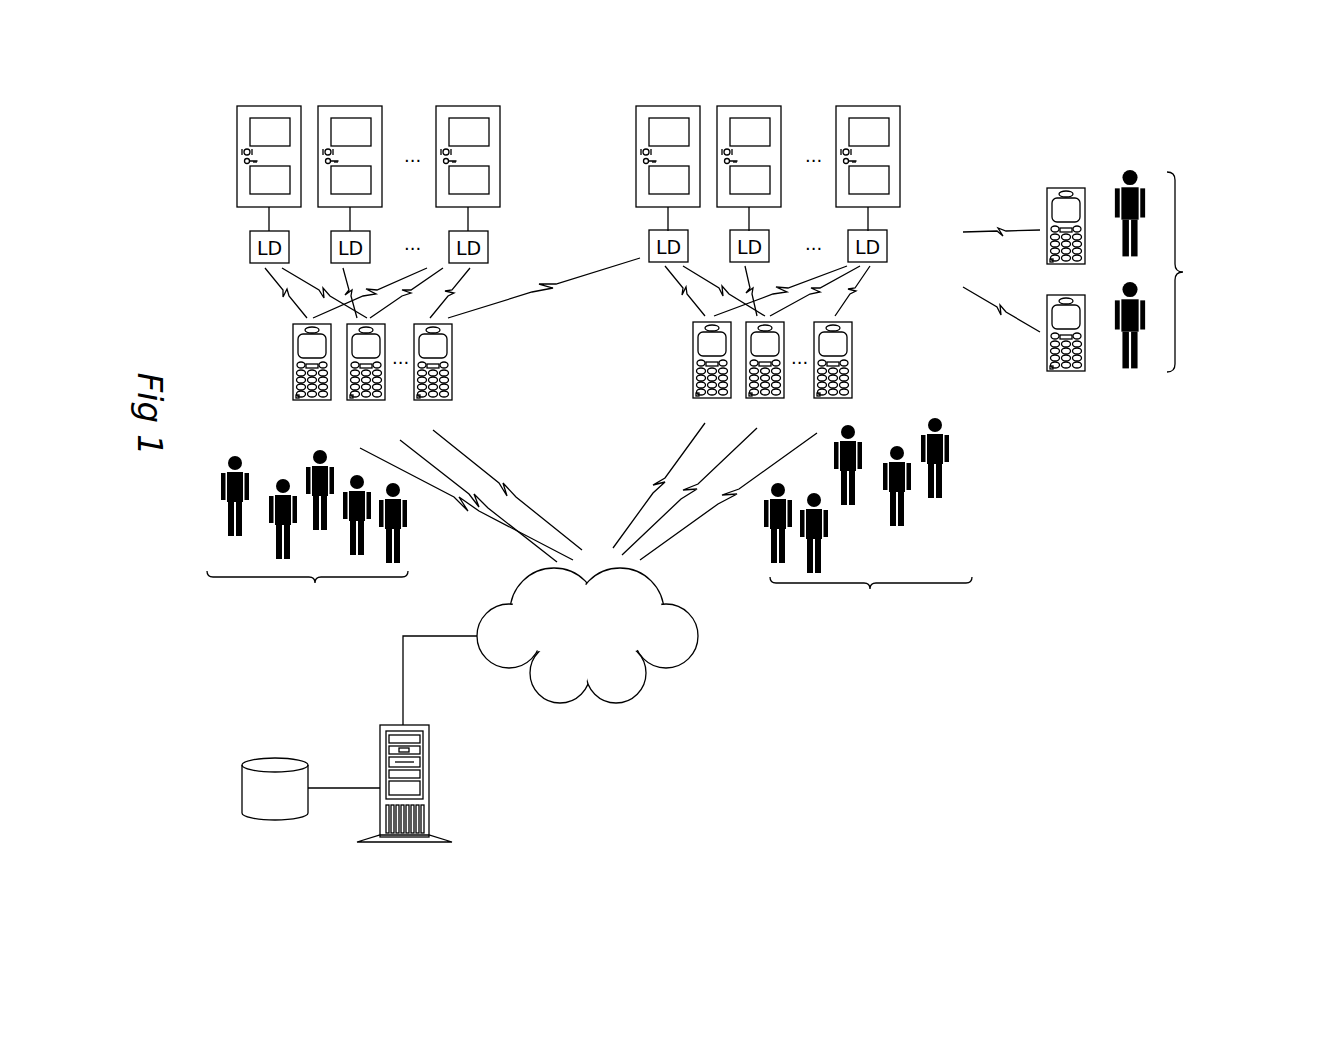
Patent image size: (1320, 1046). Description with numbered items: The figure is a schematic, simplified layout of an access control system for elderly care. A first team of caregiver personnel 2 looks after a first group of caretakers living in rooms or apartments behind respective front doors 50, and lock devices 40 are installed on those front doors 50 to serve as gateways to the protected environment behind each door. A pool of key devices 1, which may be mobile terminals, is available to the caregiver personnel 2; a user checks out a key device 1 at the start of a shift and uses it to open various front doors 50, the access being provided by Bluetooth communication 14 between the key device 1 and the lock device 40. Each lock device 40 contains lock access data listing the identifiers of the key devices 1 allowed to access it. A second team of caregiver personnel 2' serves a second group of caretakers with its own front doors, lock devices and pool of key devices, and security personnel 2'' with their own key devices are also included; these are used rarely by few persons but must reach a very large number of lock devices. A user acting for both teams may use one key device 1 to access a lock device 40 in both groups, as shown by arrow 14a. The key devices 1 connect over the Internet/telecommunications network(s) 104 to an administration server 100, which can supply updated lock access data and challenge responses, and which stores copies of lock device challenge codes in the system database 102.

The front door 50 is at (264, 153).
The lock device 40 is at (252, 241).
The key device 1 is at (301, 375).
The Bluetooth communication 14 is at (264, 290).
The arrow 14a is at (544, 288).
The communication network(s) 104 is at (587, 635).
The system database 102 is at (294, 816).
The administration server 100 is at (424, 762).
The caregiver personnel 2 is at (307, 553).
The caregiver personnel 2' is at (868, 539).
The security personnel 2'' is at (1195, 271).